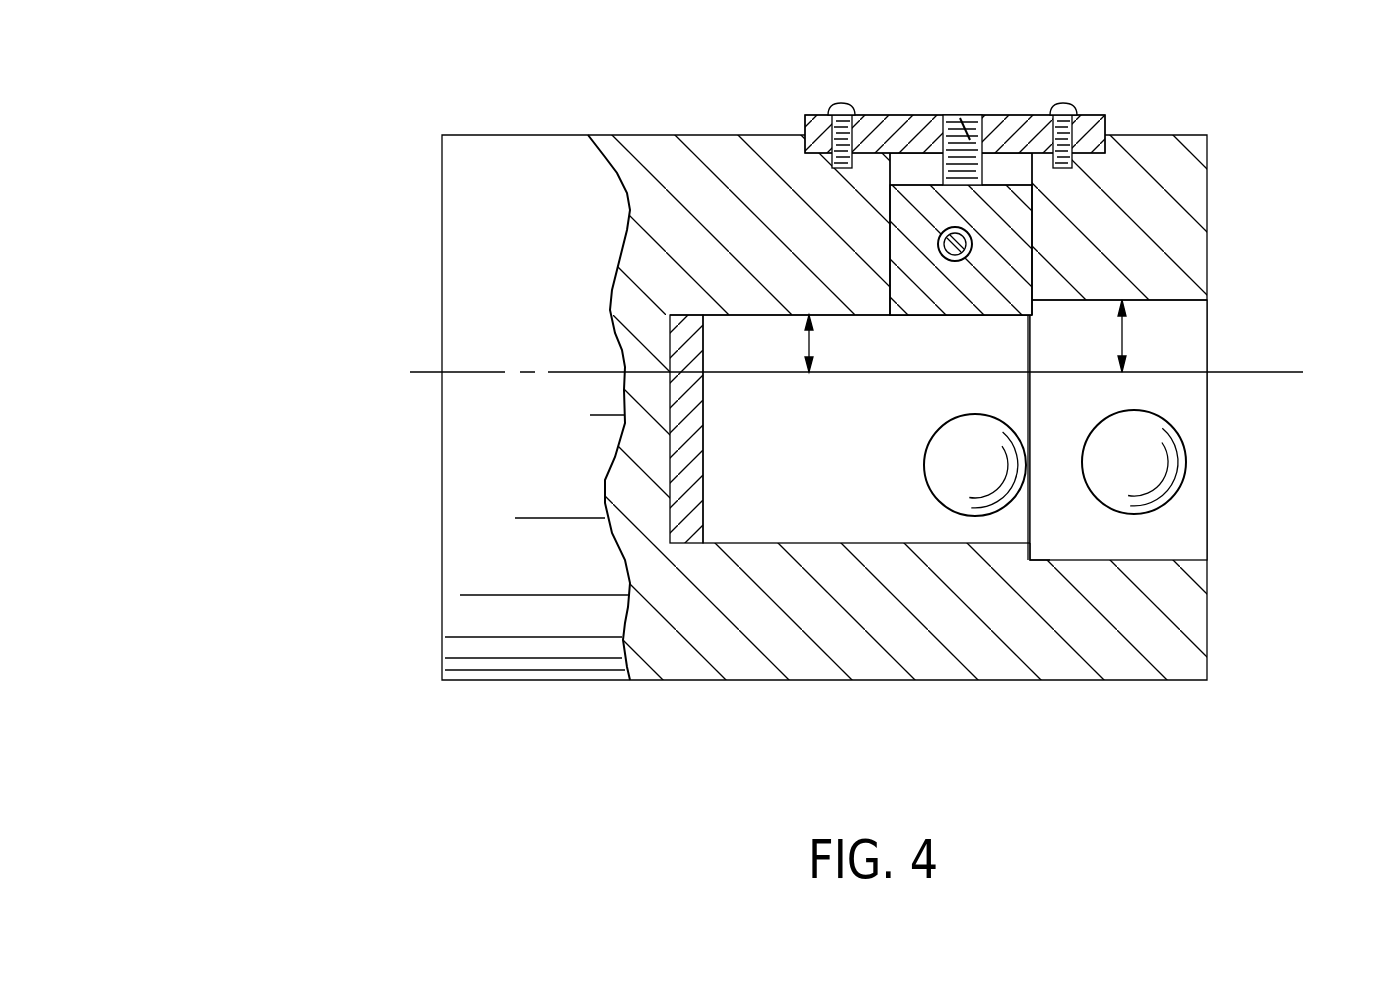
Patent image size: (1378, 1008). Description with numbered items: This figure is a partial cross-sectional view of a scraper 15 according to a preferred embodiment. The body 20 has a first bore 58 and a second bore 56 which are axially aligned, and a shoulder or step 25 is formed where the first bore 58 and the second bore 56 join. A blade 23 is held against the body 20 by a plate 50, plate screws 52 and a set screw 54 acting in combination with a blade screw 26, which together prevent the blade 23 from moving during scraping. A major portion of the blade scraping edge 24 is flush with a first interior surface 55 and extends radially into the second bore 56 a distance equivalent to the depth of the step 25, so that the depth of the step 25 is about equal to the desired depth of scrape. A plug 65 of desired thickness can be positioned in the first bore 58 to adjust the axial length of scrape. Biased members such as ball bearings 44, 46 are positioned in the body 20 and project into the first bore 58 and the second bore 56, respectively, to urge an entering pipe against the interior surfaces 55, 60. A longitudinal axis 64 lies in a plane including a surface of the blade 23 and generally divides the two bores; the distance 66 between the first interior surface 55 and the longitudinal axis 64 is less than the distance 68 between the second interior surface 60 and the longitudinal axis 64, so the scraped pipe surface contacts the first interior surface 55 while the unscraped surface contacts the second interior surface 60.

The scraper 15 is at (302, 142).
The body 20 is at (1207, 656).
The blade 23 is at (897, 236).
The blade scraping edge 24 is at (962, 317).
The step 25 is at (1032, 550).
The blade screw 26 is at (950, 262).
The ball bearings 44 is at (925, 485).
The ball bearings 46 is at (1115, 494).
The plate 50 is at (1105, 132).
The plate screws 52 is at (838, 104).
The set screw 54 is at (980, 138).
The first interior surface 55 is at (777, 320).
The second bore 56 is at (1036, 425).
The first bore 58 is at (790, 443).
The second interior surface 60 is at (1092, 300).
The longitudinal axis 64 is at (1253, 370).
The plug 65 is at (703, 510).
The distance 66 is at (812, 345).
The distance 68 is at (1130, 340).